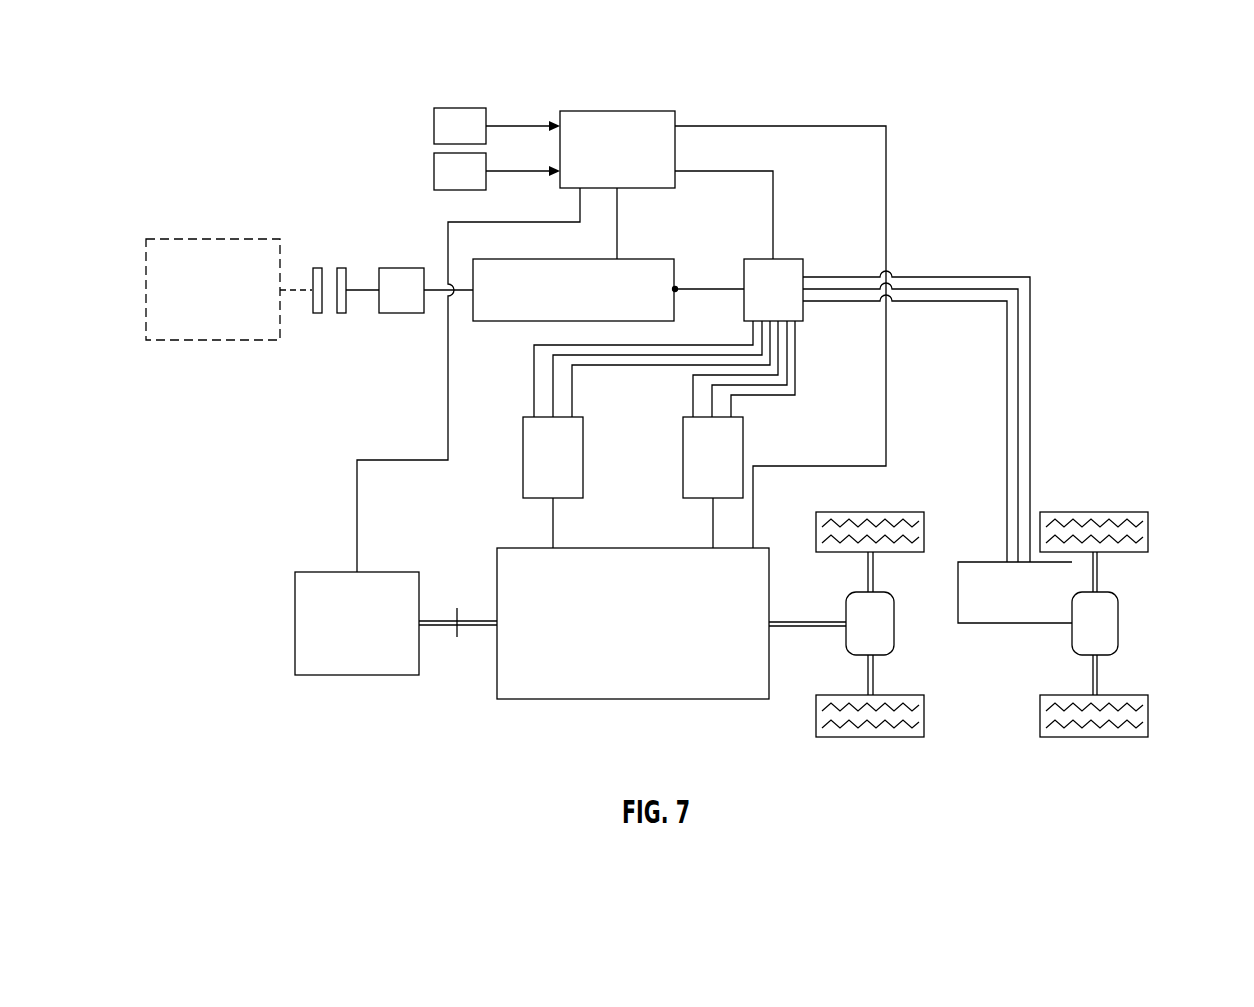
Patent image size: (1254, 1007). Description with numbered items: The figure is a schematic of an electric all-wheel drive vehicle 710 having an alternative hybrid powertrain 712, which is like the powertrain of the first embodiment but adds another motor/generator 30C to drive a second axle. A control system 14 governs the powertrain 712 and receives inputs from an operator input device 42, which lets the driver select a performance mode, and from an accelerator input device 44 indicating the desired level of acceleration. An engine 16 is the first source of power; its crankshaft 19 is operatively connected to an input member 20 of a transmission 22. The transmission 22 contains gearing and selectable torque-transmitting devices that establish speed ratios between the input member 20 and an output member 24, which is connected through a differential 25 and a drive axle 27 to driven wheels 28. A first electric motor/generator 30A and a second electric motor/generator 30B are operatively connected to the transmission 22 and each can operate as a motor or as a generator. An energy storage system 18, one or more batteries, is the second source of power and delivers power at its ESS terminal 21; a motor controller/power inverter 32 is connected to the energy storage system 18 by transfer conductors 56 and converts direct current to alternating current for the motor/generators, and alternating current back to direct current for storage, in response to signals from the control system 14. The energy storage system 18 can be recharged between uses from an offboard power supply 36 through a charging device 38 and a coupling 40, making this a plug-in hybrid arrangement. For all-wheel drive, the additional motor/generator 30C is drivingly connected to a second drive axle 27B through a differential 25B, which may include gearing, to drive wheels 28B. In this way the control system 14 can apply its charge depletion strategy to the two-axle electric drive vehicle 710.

The vehicle 710 is at (940, 52).
The powertrain 712 is at (416, 735).
The control system 14 is at (655, 111).
The operator input device 42 is at (434, 125).
The accelerator input device 44 is at (434, 170).
The offboard power supply 36 is at (180, 239).
The charging device 38 is at (392, 268).
The coupling 40 is at (326, 330).
The energy storage system 18 is at (655, 259).
The ESS terminal 21 is at (678, 288).
The motor controller/power inverter 32 is at (806, 266).
The transfer conductors 56 is at (742, 345).
The first electric motor/generator 30A is at (585, 443).
The second electric motor/generator 30B is at (745, 443).
The motor/generator 30C is at (1017, 625).
The engine 16 is at (310, 572).
The crankshaft 19 is at (434, 618).
The input member 20 is at (477, 629).
The transmission 22 is at (733, 700).
The output member 24 is at (808, 628).
The differential 25 is at (896, 620).
The drive axle 27 is at (876, 575).
The driven wheels 28 is at (900, 512).
The differential 25B is at (1120, 620).
The second drive axle 27B is at (1099, 575).
The wheels 28B is at (1128, 512).